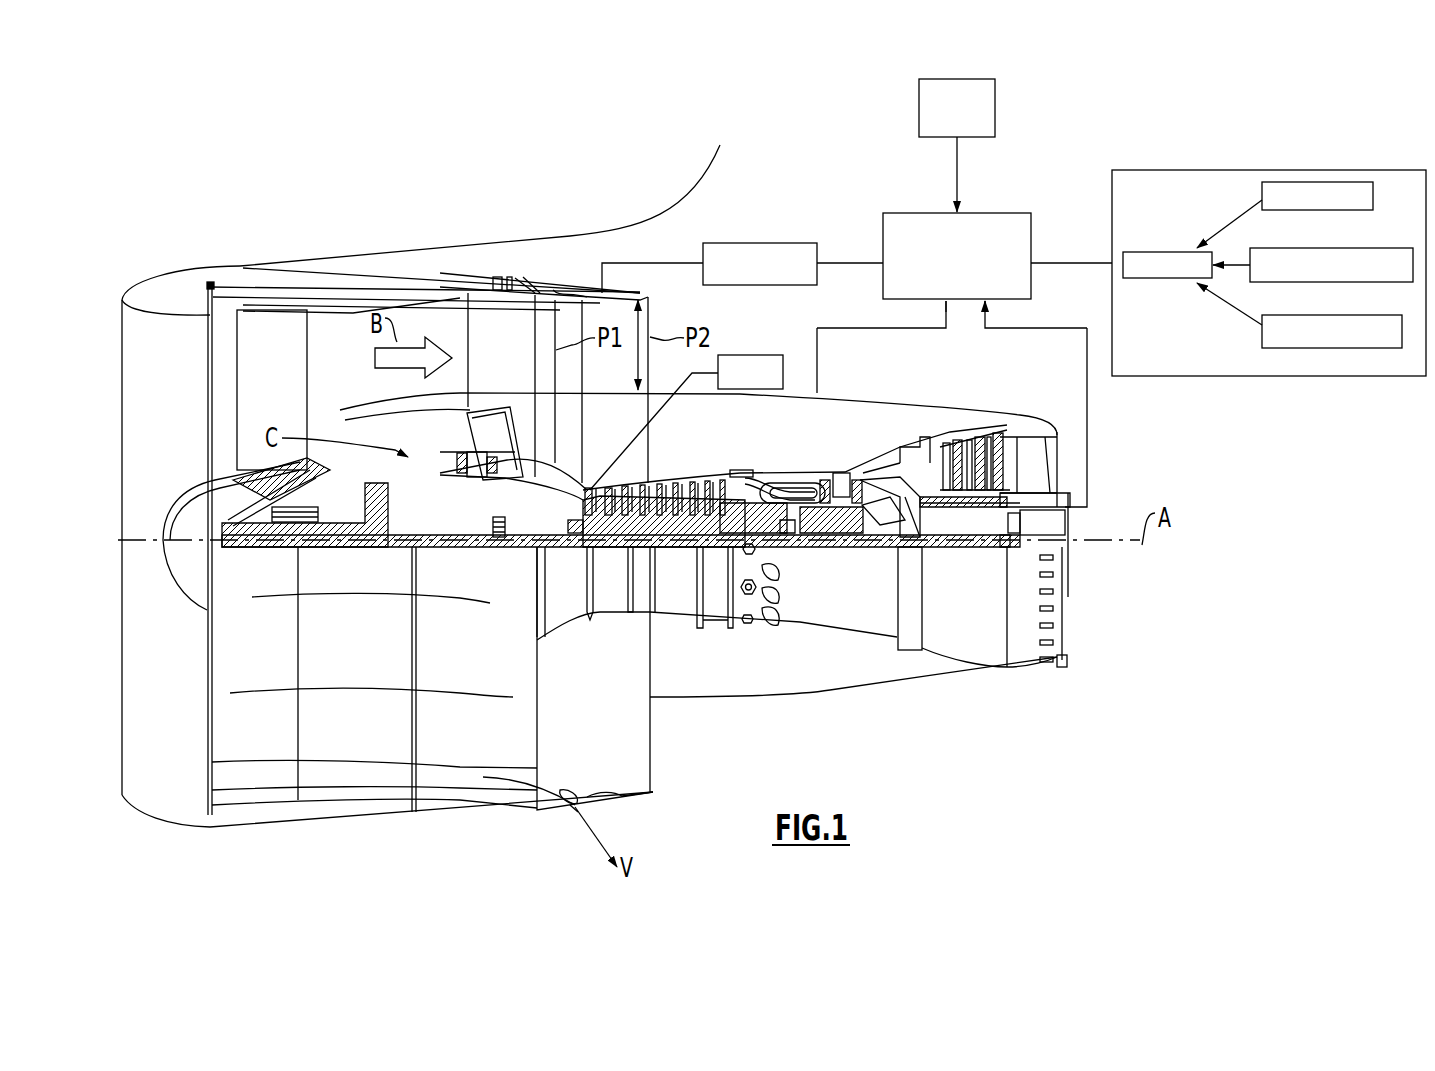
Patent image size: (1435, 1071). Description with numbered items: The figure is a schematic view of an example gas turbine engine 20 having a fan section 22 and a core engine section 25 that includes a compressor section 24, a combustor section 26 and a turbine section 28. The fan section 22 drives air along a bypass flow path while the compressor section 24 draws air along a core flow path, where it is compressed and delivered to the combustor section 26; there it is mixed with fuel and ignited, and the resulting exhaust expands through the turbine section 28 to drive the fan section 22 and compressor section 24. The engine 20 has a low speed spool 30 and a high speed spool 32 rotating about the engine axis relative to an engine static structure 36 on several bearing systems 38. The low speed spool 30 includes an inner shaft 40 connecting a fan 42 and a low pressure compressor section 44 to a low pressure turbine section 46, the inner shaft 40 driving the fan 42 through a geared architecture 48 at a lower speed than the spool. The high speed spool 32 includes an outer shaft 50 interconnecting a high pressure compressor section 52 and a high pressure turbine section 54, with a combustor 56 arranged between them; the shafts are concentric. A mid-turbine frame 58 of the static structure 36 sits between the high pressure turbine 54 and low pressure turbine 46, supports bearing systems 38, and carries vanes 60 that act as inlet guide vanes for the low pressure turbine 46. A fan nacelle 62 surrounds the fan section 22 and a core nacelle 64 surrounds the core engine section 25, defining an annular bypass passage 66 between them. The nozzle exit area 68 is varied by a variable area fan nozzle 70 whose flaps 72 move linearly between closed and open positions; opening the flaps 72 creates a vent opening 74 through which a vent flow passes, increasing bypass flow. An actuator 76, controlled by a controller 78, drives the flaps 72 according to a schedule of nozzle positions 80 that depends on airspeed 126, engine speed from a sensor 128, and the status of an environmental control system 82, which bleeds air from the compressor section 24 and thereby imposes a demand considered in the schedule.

The gas turbine engine 20 is at (791, 334).
The fan section 22 is at (306, 281).
The compressor section 24 is at (582, 465).
The core engine section 25 is at (850, 660).
The combustor section 26 is at (778, 450).
The turbine section 28 is at (907, 418).
The low speed spool 30 is at (680, 552).
The high speed spool 32 is at (718, 472).
The engine static structure 36 is at (717, 628).
The bearing systems 38 is at (502, 537).
The inner shaft 40 is at (553, 550).
The fan 42 is at (284, 404).
The low pressure compressor section 44 is at (478, 455).
The low pressure turbine section 46 is at (955, 445).
The geared architecture 48 is at (380, 533).
The outer shaft 50 is at (787, 523).
The high pressure compressor section 52 is at (663, 483).
The high pressure turbine section 54 is at (847, 480).
The combustor 56 is at (787, 493).
The mid-turbine frame 58 is at (880, 462).
The vanes 60 is at (890, 508).
The fan nacelle 62 is at (412, 264).
The core nacelle 64 is at (820, 393).
The annular bypass passage 66 is at (447, 317).
The nozzle exit area 68 is at (641, 323).
The variable area fan nozzle 70 is at (793, 215).
The flaps 72 is at (620, 293).
The vent opening 74 is at (573, 817).
The actuator 76 is at (818, 252).
The controller 78 is at (1033, 218).
The schedule of variable area nozzle positions 80 is at (1218, 170).
The environmental control system 82 is at (745, 354).
The airspeed 126 is at (996, 93).
The sensor 128 is at (1027, 528).